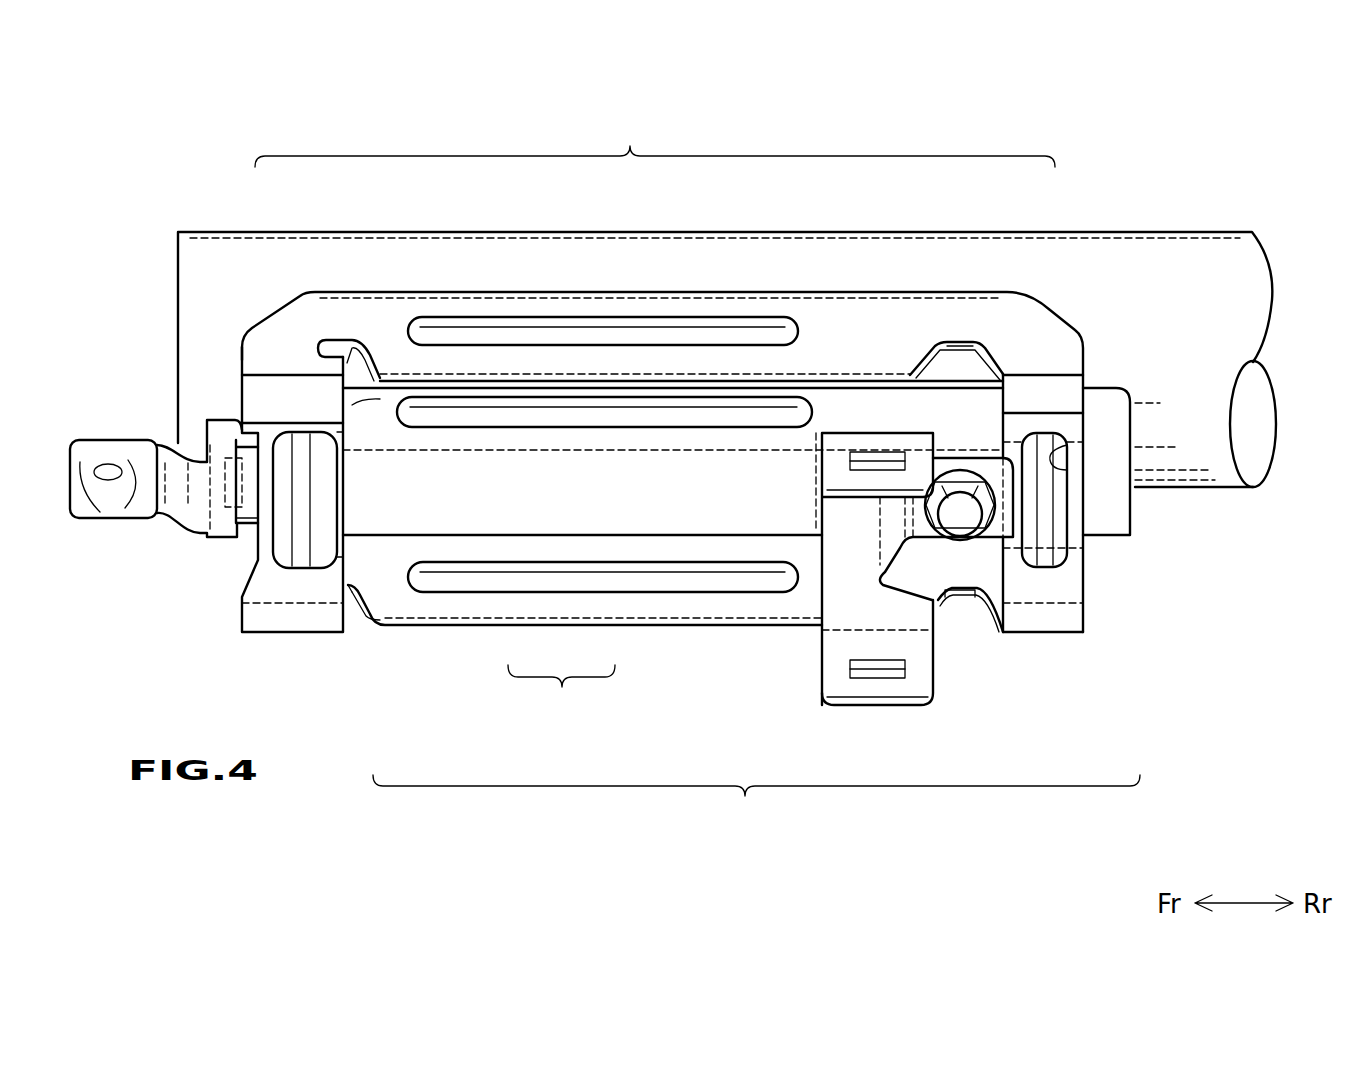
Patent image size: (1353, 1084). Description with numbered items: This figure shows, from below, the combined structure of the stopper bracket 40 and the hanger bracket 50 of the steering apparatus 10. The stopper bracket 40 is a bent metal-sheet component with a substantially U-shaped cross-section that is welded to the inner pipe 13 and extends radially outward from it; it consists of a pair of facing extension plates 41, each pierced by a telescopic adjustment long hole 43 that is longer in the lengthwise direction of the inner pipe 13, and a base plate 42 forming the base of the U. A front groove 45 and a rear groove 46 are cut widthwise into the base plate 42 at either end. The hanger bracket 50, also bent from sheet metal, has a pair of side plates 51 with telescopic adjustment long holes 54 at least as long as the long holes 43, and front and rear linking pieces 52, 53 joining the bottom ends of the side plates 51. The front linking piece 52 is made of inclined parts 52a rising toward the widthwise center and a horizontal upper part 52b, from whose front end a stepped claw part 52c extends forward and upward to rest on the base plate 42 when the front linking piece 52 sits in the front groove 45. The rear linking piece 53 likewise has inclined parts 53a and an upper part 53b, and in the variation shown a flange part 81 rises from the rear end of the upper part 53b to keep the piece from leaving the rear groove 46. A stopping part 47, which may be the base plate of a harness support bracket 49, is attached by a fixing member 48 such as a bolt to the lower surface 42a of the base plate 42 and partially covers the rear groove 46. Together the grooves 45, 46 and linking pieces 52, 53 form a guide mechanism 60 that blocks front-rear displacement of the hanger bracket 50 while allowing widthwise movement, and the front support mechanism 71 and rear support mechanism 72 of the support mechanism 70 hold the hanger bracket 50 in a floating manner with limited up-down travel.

The steering apparatus 10 is at (140, 153).
The inner pipe 13 is at (1190, 248).
The stopper bracket 40 is at (673, 589).
The extension plate 41 is at (552, 440).
The base plate 42 is at (617, 503).
The lower surface of the base plate 42a is at (689, 500).
The telescopic adjustment long hole 43 is at (741, 420).
The front groove 45 is at (250, 522).
The rear groove 46 is at (1078, 500).
The stopping part 47 is at (997, 532).
The fixing member 48 is at (958, 525).
The harness support bracket 49 is at (874, 688).
The hanger bracket 50 is at (655, 141).
The side plate 51 is at (432, 294).
The front linking piece 52 is at (296, 372).
The inclined part 52a is at (262, 383).
The upper part 52b is at (269, 548).
The claw part 52c is at (248, 480).
The rear linking piece 53 is at (1040, 374).
The inclined part 53a is at (1057, 420).
The upper part 53b is at (1012, 450).
The telescopic adjustment long hole 54 is at (582, 333).
The guide mechanism 60 is at (205, 557).
The support mechanism 70 is at (756, 805).
The front support mechanism 71 is at (369, 646).
The rear support mechanism 72 is at (1102, 645).
The flange part 81 is at (1052, 455).